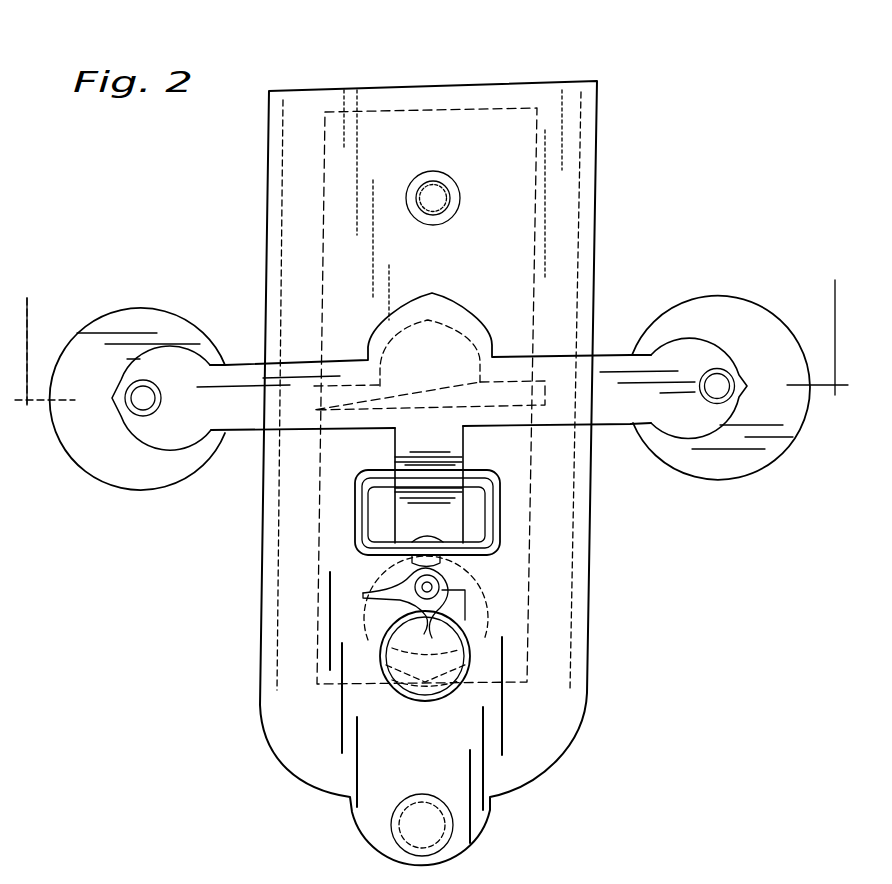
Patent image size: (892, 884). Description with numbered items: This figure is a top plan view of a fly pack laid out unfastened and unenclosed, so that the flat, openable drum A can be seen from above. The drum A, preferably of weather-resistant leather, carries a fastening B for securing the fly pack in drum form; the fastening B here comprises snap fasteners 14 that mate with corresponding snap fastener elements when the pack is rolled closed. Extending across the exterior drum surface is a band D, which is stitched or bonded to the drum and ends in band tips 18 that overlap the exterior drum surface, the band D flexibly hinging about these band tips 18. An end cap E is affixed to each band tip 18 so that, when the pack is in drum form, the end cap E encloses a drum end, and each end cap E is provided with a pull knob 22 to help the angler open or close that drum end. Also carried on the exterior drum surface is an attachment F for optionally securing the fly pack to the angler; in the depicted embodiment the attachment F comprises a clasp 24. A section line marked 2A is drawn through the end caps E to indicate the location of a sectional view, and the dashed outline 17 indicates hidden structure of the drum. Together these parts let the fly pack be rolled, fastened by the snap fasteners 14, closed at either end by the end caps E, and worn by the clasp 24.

The drum A is at (597, 100).
The fastening B is at (427, 177).
The band D is at (247, 425).
The end cap E is at (741, 318).
The attachment F is at (498, 525).
The snap fasteners 14 is at (424, 197).
The backing plate 17 is at (388, 113).
The band tip 18 is at (663, 360).
The pull knob 22 is at (717, 390).
The clasp 24 is at (422, 602).
The section line 2A is at (431, 334).